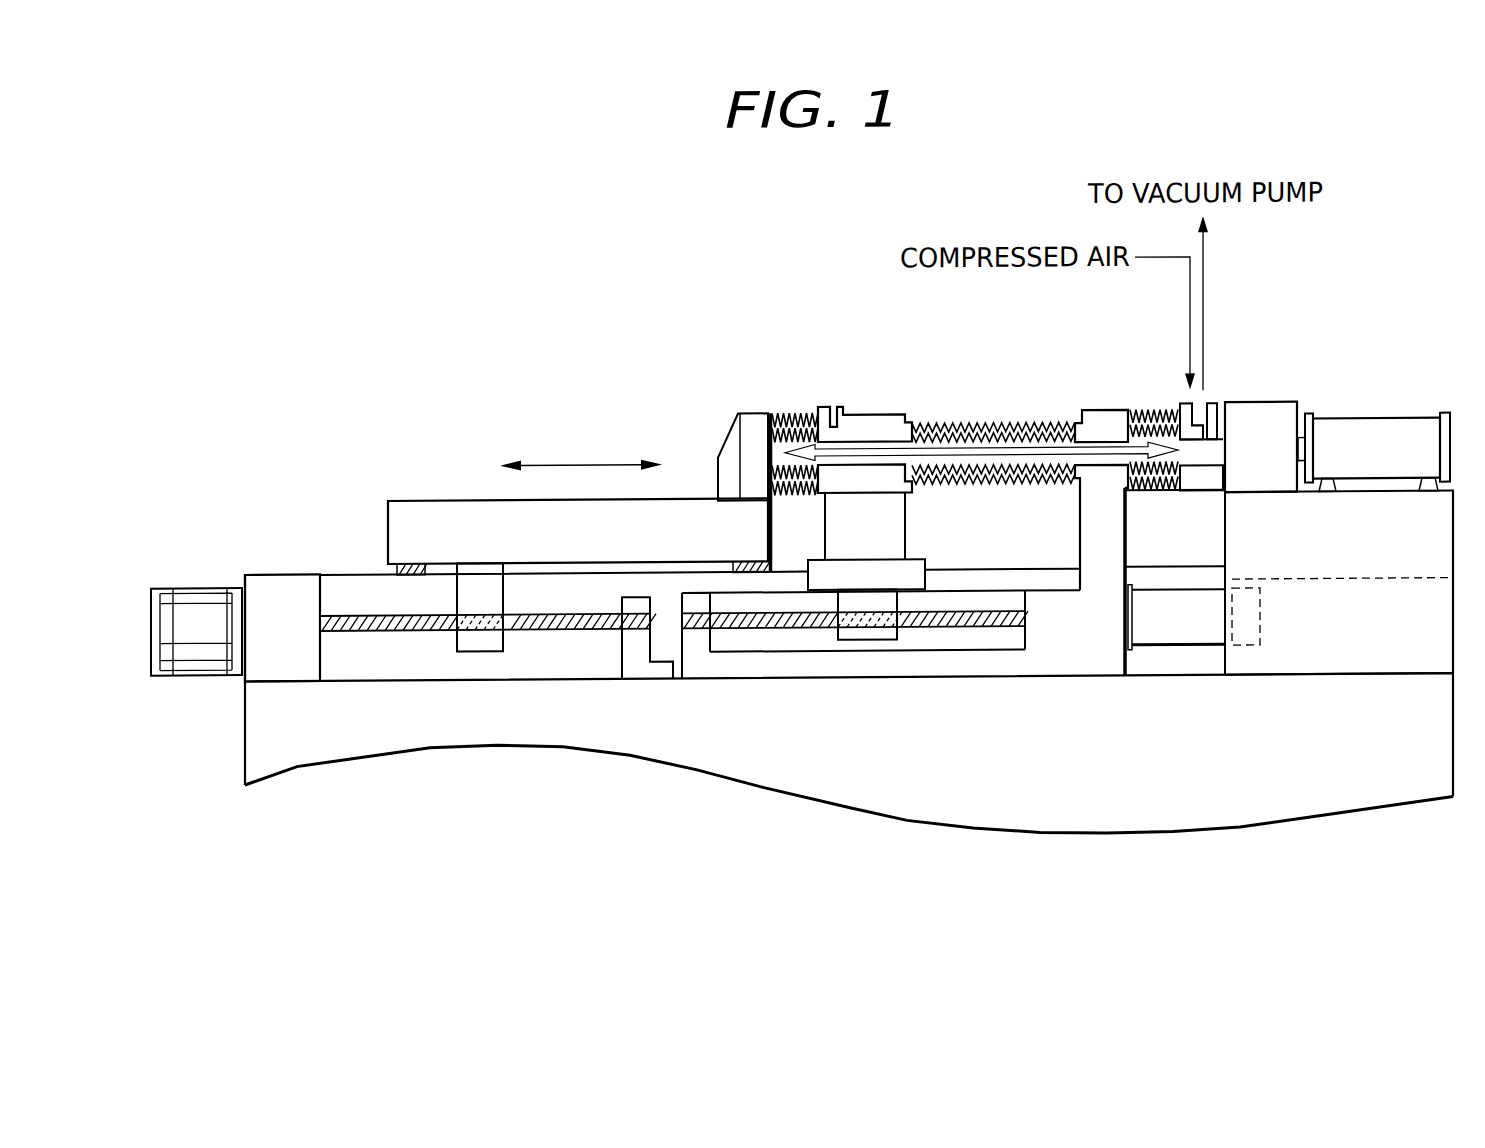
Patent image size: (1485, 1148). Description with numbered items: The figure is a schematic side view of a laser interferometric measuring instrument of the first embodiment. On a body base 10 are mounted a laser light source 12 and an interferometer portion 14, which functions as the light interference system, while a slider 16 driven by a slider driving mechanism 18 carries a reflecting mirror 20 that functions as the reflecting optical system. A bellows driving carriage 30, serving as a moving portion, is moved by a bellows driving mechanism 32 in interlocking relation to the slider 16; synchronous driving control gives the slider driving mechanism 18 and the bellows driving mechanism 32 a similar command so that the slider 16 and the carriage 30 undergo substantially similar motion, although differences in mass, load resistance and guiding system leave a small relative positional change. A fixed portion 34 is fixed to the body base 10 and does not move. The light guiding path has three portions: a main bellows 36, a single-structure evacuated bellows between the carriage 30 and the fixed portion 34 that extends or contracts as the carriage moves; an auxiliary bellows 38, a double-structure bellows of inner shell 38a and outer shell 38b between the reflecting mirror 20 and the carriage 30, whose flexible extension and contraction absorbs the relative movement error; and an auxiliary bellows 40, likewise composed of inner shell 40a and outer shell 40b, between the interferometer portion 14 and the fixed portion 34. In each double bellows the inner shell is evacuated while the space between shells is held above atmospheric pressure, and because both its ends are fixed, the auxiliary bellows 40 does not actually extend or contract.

The body base 10 is at (1232, 810).
The laser light source 12 is at (1373, 436).
The interferometer portion 14 is at (1258, 427).
The slider 16 is at (430, 511).
The slider driving mechanism 18 is at (417, 629).
The reflecting mirror 20 is at (770, 419).
The bellows driving carriage 30 is at (862, 429).
The bellows driving mechanism 32 is at (913, 637).
The fixed portion 34 is at (1097, 423).
The main bellows 36 is at (998, 488).
The auxiliary bellows 38 is at (788, 419).
The inner shell 38a is at (797, 482).
The outer shell 38b is at (802, 419).
The auxiliary bellows 40 is at (1145, 497).
The inner shell 40a is at (1167, 497).
The outer shell 40b is at (1145, 414).